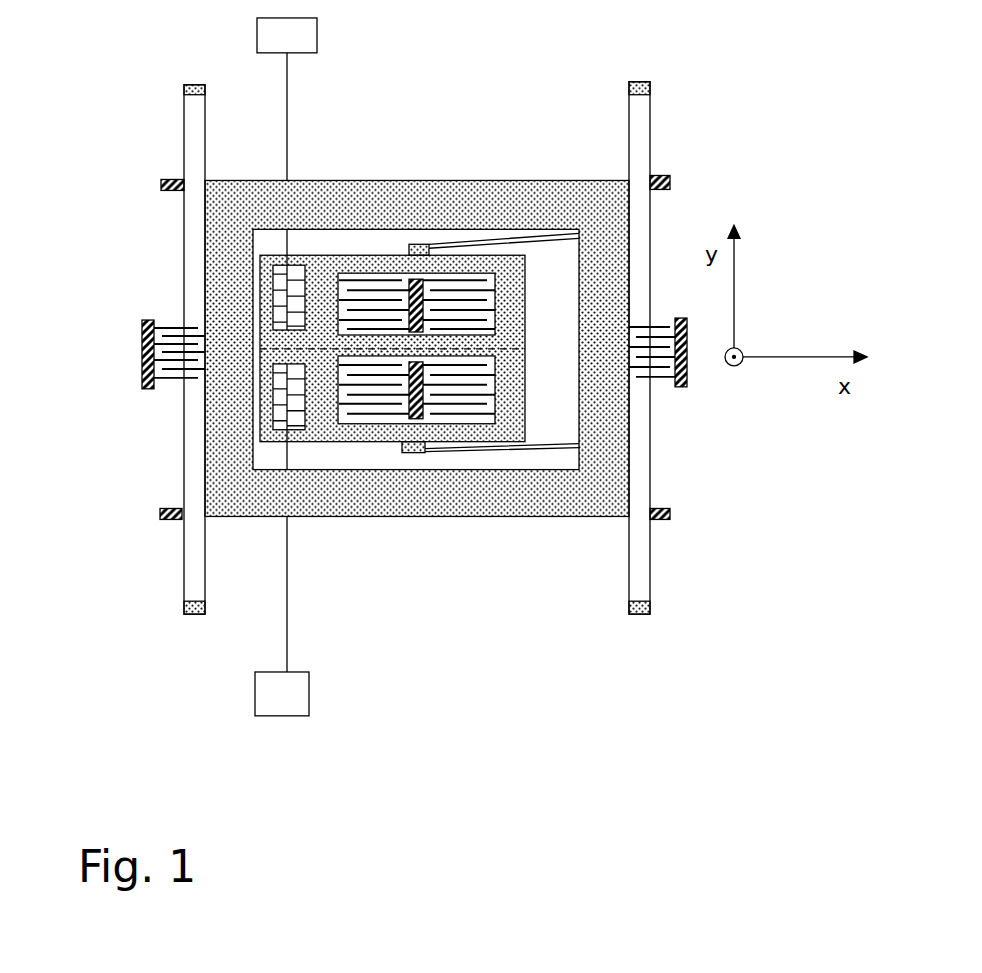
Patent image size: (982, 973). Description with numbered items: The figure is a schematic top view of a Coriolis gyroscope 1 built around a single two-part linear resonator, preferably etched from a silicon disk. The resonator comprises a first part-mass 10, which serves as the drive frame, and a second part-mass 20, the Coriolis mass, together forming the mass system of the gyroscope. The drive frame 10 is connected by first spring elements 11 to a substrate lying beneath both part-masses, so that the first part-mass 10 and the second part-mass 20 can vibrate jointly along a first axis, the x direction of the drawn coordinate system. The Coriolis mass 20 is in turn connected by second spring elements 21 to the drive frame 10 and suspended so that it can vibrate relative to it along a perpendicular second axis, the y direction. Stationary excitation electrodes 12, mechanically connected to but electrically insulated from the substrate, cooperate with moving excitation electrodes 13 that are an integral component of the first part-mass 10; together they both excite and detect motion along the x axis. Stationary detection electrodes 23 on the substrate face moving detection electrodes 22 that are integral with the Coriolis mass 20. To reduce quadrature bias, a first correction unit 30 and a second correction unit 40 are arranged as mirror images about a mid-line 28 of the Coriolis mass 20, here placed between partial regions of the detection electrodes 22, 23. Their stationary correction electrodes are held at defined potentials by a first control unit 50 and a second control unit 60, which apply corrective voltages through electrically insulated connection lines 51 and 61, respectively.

The Coriolis gyroscope 1 is at (502, 79).
The first part-mass 10 is at (392, 200).
The first spring elements 11 is at (183, 90).
The stationary excitation electrodes 12 is at (140, 364).
The moving excitation electrodes 13 is at (180, 327).
The second part-mass 20 is at (322, 428).
The second spring elements 21 is at (458, 450).
The moving detection electrodes 22 is at (438, 408).
The stationary detection electrodes 23 is at (393, 405).
The mid-line 28 is at (523, 347).
The first correction unit 30 is at (278, 265).
The second correction unit 40 is at (277, 407).
The first control unit 50 is at (255, 32).
The electrical connection line 51 is at (285, 162).
The second control unit 60 is at (275, 715).
The electrical connection line 61 is at (285, 560).